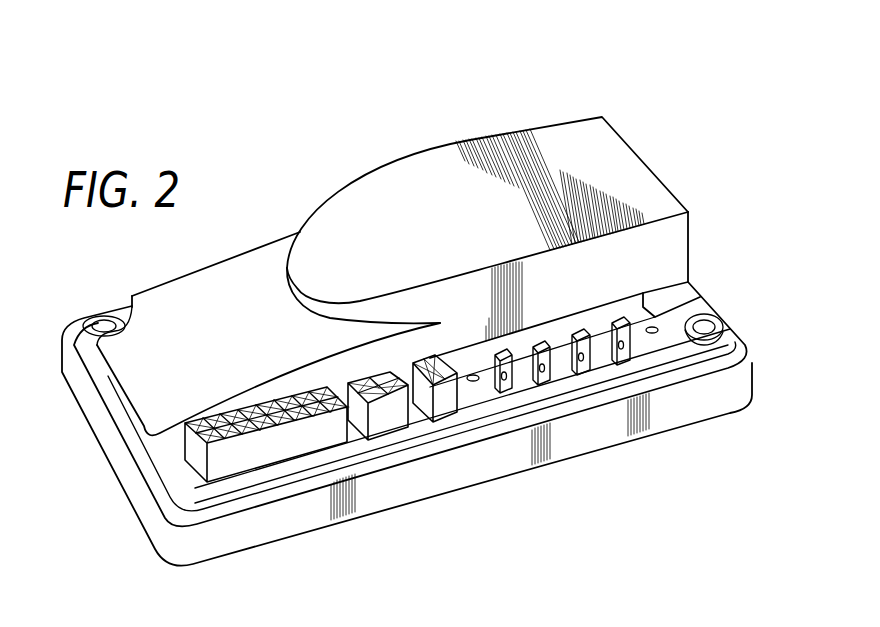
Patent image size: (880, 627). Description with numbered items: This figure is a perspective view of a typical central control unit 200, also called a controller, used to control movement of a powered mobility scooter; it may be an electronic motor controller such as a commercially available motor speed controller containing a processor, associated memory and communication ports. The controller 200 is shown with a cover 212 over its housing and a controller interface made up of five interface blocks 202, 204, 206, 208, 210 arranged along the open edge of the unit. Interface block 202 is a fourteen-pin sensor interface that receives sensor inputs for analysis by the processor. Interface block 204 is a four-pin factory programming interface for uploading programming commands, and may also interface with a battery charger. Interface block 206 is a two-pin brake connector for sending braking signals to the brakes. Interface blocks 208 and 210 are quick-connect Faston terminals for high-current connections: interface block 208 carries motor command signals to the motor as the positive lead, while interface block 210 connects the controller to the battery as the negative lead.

The central control unit 200 is at (702, 160).
The interface block 202 is at (242, 460).
The interface block 204 is at (387, 420).
The interface block 206 is at (443, 407).
The interface block 208 is at (518, 387).
The interface block 210 is at (598, 368).
The cover 212 is at (572, 140).